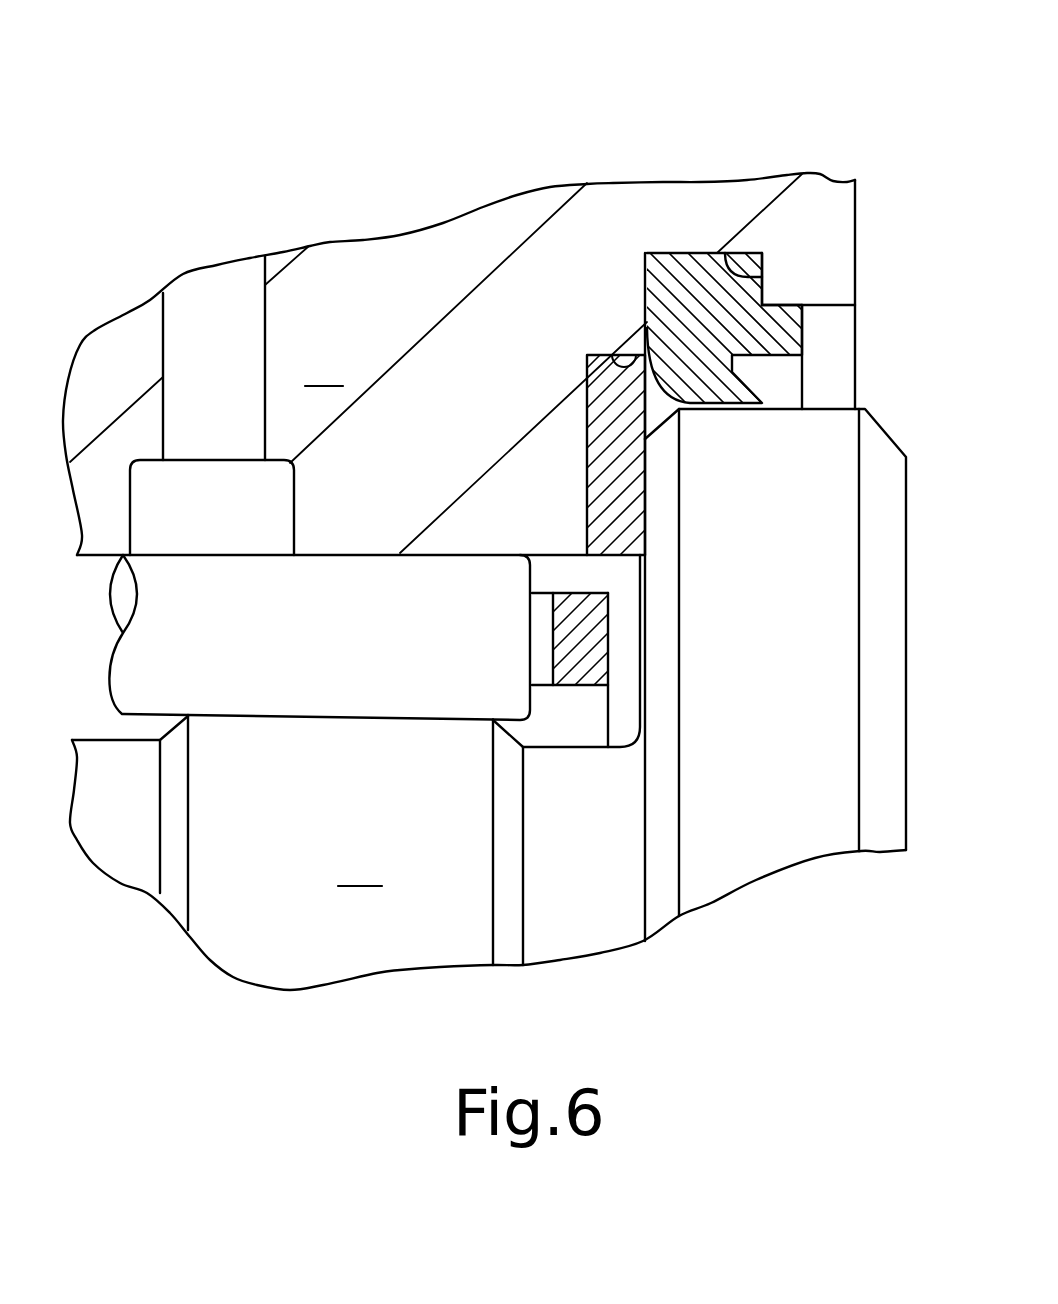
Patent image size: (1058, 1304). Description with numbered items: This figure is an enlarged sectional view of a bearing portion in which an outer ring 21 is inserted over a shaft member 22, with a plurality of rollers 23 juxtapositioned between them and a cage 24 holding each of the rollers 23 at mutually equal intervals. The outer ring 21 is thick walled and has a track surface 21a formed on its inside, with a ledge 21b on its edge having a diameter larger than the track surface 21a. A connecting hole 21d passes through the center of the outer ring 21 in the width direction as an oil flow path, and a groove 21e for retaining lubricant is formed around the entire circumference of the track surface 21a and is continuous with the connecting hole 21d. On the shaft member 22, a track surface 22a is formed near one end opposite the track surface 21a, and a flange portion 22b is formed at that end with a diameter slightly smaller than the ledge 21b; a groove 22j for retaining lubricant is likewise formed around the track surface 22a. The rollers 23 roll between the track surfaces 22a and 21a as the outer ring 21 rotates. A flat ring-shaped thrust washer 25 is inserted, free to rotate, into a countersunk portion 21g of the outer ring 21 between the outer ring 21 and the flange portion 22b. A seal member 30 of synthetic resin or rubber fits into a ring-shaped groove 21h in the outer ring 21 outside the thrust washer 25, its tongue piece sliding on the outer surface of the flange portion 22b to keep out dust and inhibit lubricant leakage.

The outer ring 21 is at (495, 303).
The track surface 21a is at (338, 552).
The ledge 21b is at (829, 307).
The connecting hole 21d is at (265, 320).
The groove 21e is at (177, 460).
The countersunk portion 21g is at (647, 330).
The ring-shaped groove 21h is at (762, 277).
The shaft member 22 is at (488, 726).
The track surface 22a is at (267, 718).
The flange portion 22b is at (809, 836).
The groove 22j is at (110, 740).
The roller 23 is at (437, 597).
The cage 24 is at (580, 620).
The thrust washer 25 is at (588, 353).
The seal member 30 is at (693, 280).